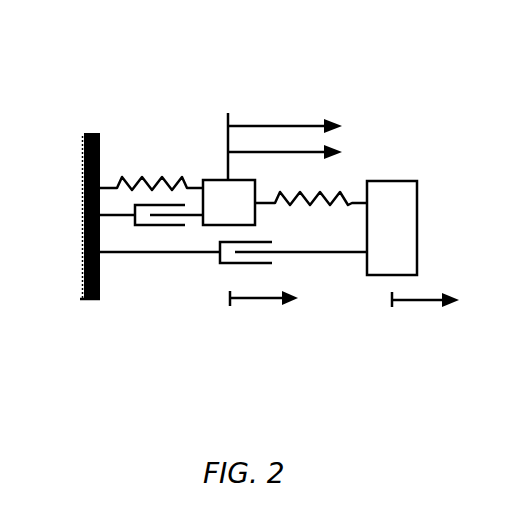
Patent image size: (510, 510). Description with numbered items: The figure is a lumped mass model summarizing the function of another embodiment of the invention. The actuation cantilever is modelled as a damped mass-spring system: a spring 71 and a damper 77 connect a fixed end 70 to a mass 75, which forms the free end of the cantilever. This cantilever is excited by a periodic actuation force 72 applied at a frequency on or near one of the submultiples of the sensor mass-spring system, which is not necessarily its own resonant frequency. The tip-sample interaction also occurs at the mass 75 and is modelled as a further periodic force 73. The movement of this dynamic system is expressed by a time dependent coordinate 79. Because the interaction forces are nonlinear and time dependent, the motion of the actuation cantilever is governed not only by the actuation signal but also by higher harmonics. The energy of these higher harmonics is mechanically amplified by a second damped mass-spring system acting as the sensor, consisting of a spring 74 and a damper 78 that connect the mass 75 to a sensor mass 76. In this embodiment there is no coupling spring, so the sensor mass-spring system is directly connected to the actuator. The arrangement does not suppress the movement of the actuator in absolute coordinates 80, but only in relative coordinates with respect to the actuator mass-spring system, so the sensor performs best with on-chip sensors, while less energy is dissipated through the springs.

The fixed end 70 is at (92, 133).
The spring 71 is at (150, 172).
The periodic actuation force 72 is at (280, 122).
The periodic force 73 is at (292, 152).
The spring 74 is at (315, 192).
The mass 75 is at (229, 202).
The mass 76 is at (392, 228).
The damper 77 is at (150, 228).
The damper 78 is at (222, 265).
The time dependent coordinate 79 is at (230, 305).
The absolute coordinates 80 is at (392, 305).